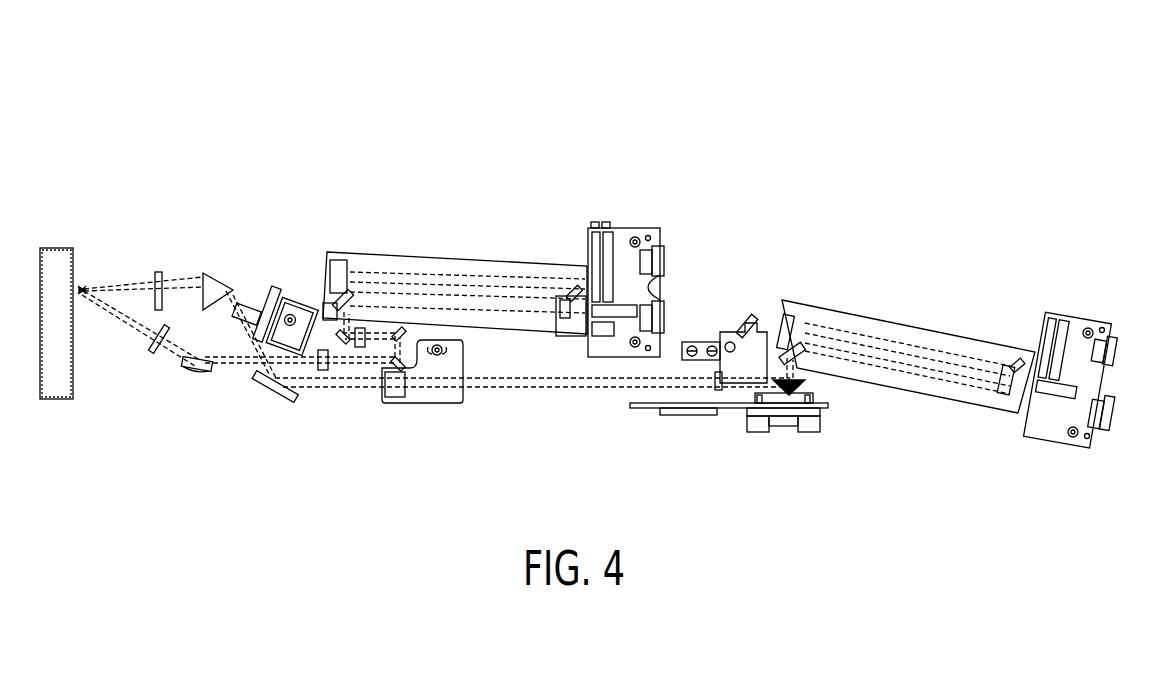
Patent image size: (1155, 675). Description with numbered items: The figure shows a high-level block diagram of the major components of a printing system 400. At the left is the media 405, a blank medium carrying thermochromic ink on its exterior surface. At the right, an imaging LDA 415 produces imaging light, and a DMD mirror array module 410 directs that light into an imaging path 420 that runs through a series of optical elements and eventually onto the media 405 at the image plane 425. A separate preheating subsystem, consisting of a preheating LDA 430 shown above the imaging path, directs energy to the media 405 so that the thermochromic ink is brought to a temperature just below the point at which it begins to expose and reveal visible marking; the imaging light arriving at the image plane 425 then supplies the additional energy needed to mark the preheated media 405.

The printing system 400 is at (983, 105).
The media 405 is at (82, 411).
The DMD mirror array module 410 is at (816, 414).
The imaging LDA 415 is at (1074, 278).
The imaging path 420 is at (330, 404).
The image plane 425 is at (90, 280).
The preheating LDA 430 is at (616, 220).